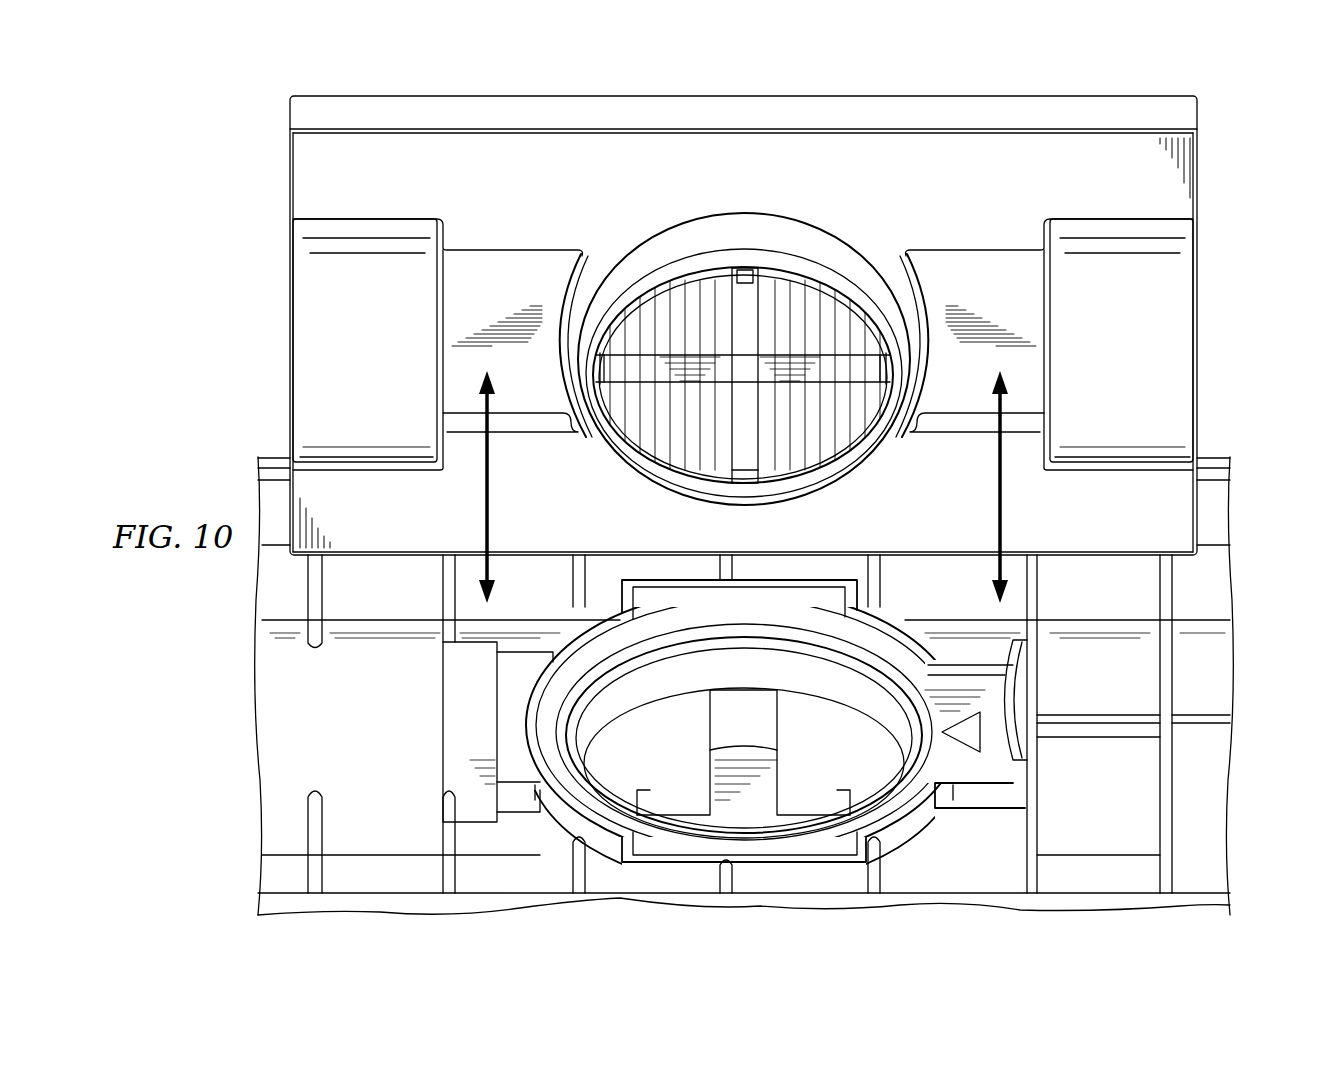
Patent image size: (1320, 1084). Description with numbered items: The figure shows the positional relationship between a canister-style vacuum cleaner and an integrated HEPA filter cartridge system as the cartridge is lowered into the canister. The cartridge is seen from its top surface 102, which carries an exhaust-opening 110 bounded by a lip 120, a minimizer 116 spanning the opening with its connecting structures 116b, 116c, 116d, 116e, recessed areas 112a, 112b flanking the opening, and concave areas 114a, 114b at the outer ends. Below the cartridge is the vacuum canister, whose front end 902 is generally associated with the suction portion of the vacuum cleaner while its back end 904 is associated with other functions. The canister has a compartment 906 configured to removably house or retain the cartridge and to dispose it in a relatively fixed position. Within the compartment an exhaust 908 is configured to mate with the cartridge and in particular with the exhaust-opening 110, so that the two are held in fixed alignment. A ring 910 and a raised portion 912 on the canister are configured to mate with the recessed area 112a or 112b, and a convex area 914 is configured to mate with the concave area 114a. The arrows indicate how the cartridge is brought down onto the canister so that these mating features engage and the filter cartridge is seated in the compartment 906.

The top surface 102 is at (398, 524).
The exhaust-opening 110 is at (713, 226).
The recessed area 112a is at (506, 294).
The recessed area 112b is at (1028, 294).
The concave area 114a is at (385, 349).
The concave area 114b is at (1147, 349).
The minimizer 116 is at (743, 310).
The connecting structure 116b is at (745, 288).
The connecting structure 116c is at (880, 378).
The connecting structure 116d is at (755, 497).
The connecting structure 116e is at (610, 378).
The lip 120 is at (830, 270).
The front end 902 is at (288, 700).
The back end 904 is at (1207, 690).
The compartment 906 is at (1121, 814).
The exhaust 908 is at (845, 759).
The ring 910 is at (560, 820).
The raised portion 912 is at (462, 690).
The convex area 914 is at (383, 786).